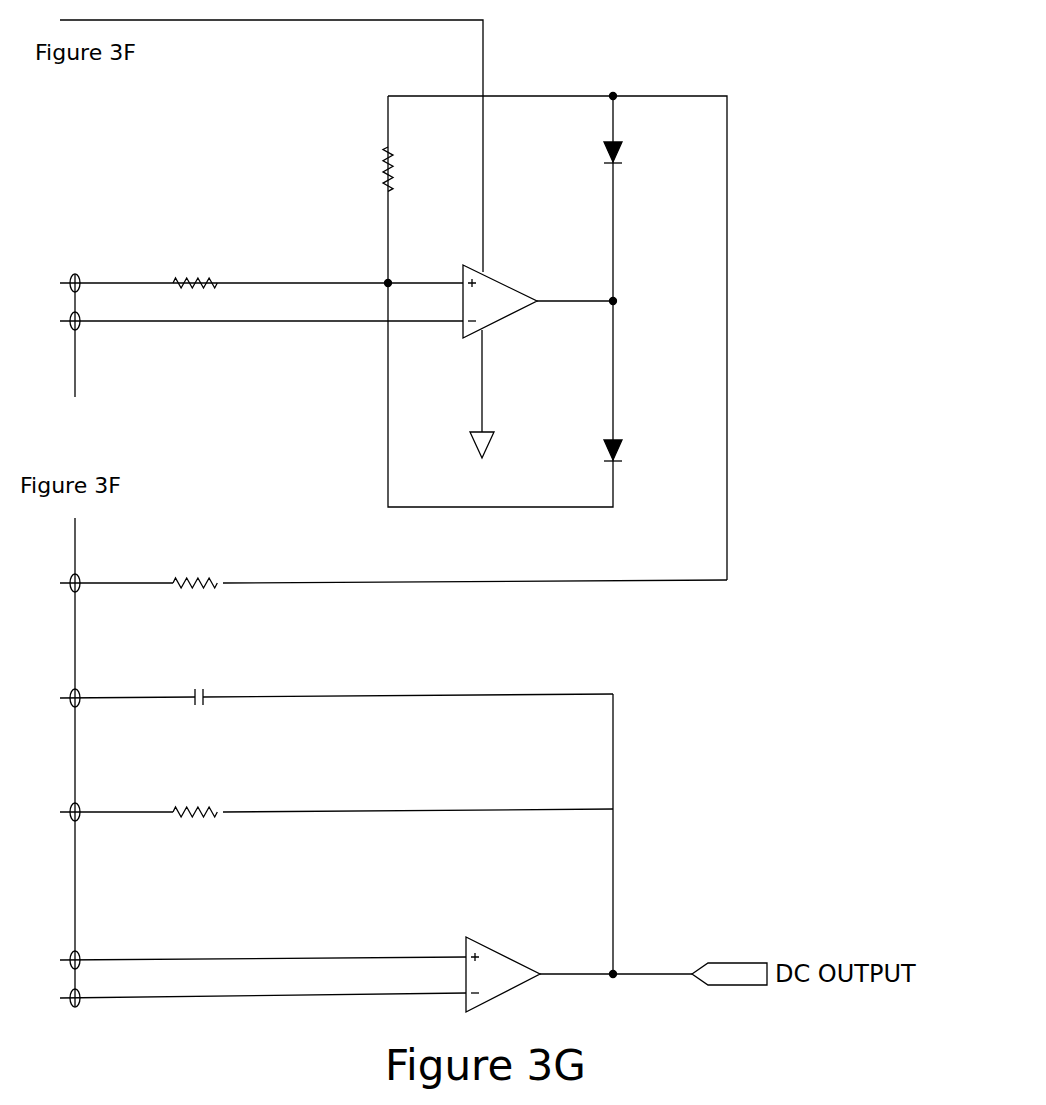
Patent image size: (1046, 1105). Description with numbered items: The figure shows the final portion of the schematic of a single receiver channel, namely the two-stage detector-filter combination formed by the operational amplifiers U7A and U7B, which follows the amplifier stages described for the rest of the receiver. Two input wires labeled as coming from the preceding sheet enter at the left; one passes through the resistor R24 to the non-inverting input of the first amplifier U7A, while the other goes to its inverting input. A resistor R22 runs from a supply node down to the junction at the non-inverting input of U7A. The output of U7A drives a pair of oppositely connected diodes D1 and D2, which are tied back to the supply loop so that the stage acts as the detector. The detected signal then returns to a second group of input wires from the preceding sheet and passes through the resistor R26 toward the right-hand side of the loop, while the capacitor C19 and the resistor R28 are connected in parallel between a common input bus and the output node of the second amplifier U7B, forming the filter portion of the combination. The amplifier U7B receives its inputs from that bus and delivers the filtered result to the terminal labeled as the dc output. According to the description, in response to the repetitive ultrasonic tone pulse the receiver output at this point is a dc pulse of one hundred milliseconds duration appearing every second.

The resistor R22 10K R22 is at (415, 174).
The resistor R24 10K R24 is at (196, 283).
The resistor R26 5K R26 is at (393, 582).
The resistor R28 10K R28 is at (336, 811).
The capacitor C19 is at (336, 698).
The diode D1 1N4148 D1 is at (658, 140).
The diode D2 1N4148 D2 is at (658, 459).
The detector-filter stage U7A is at (530, 346).
The detector-filter stage U7B is at (376, 966).